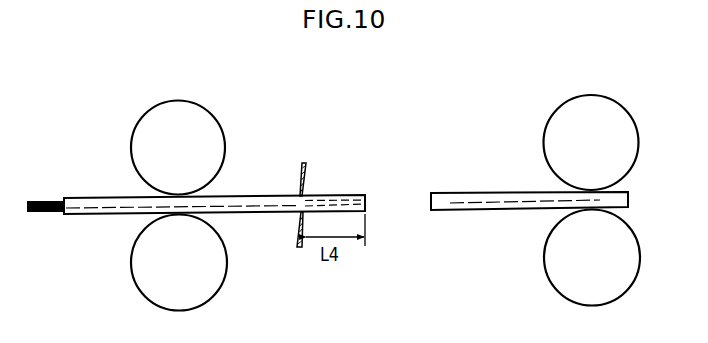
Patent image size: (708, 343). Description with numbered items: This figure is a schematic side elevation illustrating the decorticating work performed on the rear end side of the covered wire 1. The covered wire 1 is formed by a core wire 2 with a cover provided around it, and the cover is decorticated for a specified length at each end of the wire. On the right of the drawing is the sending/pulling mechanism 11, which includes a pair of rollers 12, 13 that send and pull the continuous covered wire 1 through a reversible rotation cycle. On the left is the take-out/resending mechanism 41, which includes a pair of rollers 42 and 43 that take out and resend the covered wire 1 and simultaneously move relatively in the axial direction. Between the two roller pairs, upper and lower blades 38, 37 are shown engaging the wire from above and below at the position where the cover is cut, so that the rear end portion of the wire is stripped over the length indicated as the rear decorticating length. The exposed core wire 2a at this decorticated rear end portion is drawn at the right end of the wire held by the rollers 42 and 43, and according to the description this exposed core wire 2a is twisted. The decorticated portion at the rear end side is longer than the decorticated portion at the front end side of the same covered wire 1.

The covered wire 1 is at (107, 216).
The core wire 2 is at (43, 213).
The exposed core wire 2a is at (336, 196).
The sending/pulling mechanism 11 is at (612, 70).
The roller 12 is at (544, 137).
The roller 13 is at (544, 262).
The lower shear blade 37 is at (297, 241).
The upper shear blade 38 is at (301, 172).
The take-out/resending mechanism 41 is at (128, 87).
The roller 42 is at (225, 275).
The roller 43 is at (218, 121).